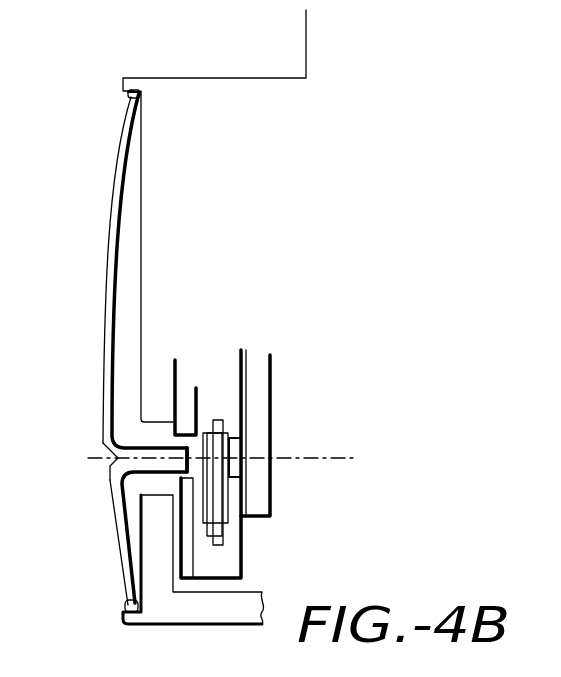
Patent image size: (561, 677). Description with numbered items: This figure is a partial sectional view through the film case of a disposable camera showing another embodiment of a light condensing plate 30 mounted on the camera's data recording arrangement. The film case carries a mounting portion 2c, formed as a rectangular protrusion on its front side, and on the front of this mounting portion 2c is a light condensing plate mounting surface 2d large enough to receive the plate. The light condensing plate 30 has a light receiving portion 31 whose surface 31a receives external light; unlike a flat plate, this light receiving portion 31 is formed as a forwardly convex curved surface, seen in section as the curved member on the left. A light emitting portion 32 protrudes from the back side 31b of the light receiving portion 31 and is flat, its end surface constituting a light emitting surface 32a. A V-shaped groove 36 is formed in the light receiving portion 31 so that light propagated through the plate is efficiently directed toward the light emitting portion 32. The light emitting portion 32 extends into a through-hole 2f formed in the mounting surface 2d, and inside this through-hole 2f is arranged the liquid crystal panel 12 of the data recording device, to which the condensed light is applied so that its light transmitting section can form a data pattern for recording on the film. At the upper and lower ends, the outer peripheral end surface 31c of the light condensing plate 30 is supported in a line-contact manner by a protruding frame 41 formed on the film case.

The mounting portion 2c is at (232, 115).
The light condensing plate mounting surface 2d is at (128, 261).
The through-hole 2f is at (160, 437).
The liquid crystal panel 12 is at (218, 565).
The light condensing plate 30 is at (80, 297).
The light receiving portion 31 is at (177, 333).
The surface of the light receiving portion 31a is at (103, 387).
The back side of the light receiving portion 31b is at (119, 203).
The outer peripheral end surface 31c is at (130, 98).
The light emitting portion 32 is at (143, 458).
The light emitting surface 32a is at (187, 452).
The V-shaped groove 36 is at (100, 456).
The protruding frame 41 is at (134, 80).